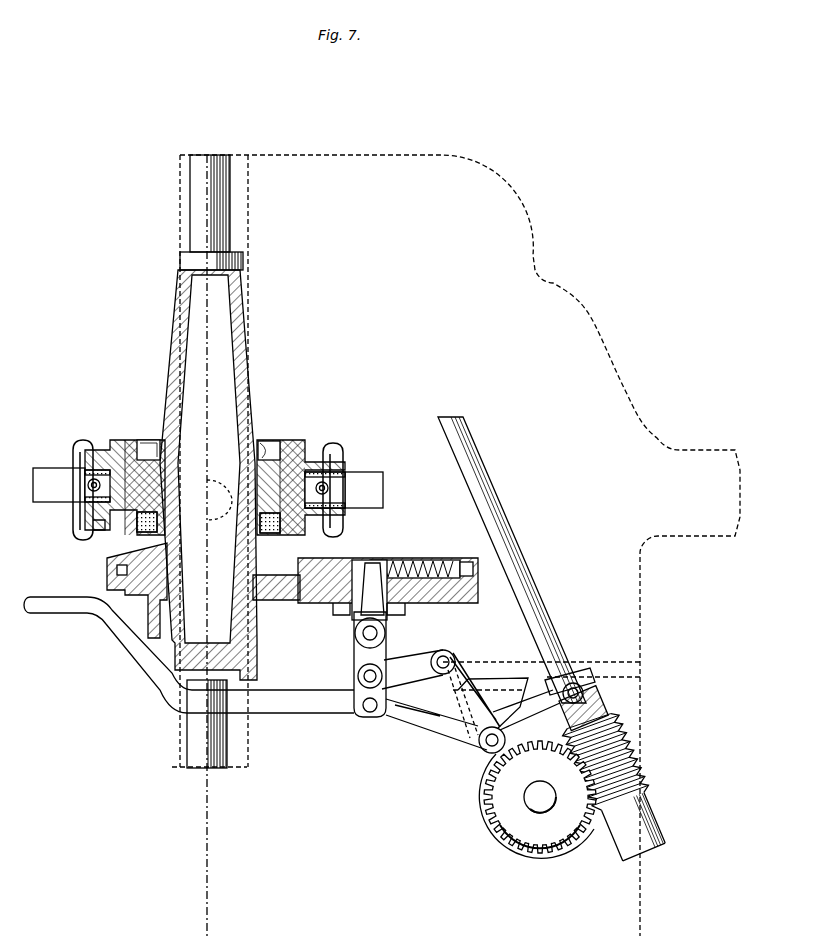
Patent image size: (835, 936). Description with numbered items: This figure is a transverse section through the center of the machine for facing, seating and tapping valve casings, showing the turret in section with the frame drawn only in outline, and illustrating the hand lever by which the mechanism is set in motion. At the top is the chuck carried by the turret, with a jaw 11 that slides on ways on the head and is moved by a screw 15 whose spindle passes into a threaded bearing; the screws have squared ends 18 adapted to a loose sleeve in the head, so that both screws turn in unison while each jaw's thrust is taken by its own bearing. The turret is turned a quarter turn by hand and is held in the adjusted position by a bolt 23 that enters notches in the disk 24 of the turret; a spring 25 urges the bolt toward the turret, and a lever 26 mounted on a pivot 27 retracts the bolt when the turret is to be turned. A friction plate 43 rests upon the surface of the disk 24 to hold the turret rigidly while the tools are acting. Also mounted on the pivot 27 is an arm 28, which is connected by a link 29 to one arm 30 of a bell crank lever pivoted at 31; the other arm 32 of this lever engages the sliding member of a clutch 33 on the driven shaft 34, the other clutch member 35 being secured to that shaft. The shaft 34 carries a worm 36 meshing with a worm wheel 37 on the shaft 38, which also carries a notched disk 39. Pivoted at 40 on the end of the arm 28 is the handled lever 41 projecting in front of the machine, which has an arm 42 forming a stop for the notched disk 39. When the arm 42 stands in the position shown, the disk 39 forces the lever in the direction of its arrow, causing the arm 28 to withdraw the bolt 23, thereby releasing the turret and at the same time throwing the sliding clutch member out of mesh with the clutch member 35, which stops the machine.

The jaw 11 is at (208, 488).
The screw 15 is at (130, 487).
The squared end 18 is at (78, 470).
The bolt 23 is at (367, 578).
The disk 24 is at (107, 563).
The spring 25 is at (430, 562).
The lever 26 is at (355, 618).
The pivot 27 is at (385, 634).
The arm 28 is at (362, 663).
The link 29 is at (443, 650).
The arm of bell crank lever 30 is at (470, 668).
The pivot of bell crank lever 31 is at (485, 745).
The arm of bell crank lever 32 is at (570, 690).
The clutch 33 is at (590, 693).
The driven shaft 34 is at (552, 628).
The clutch member 35 is at (606, 712).
The worm 36 is at (632, 753).
The worm wheel 37 is at (540, 797).
The shaft 38 is at (540, 782).
The notched disk 39 is at (477, 800).
The pivot 40 is at (370, 712).
The handled lever 41 is at (189, 655).
The arm 42 is at (434, 720).
The friction plate 43 is at (105, 538).